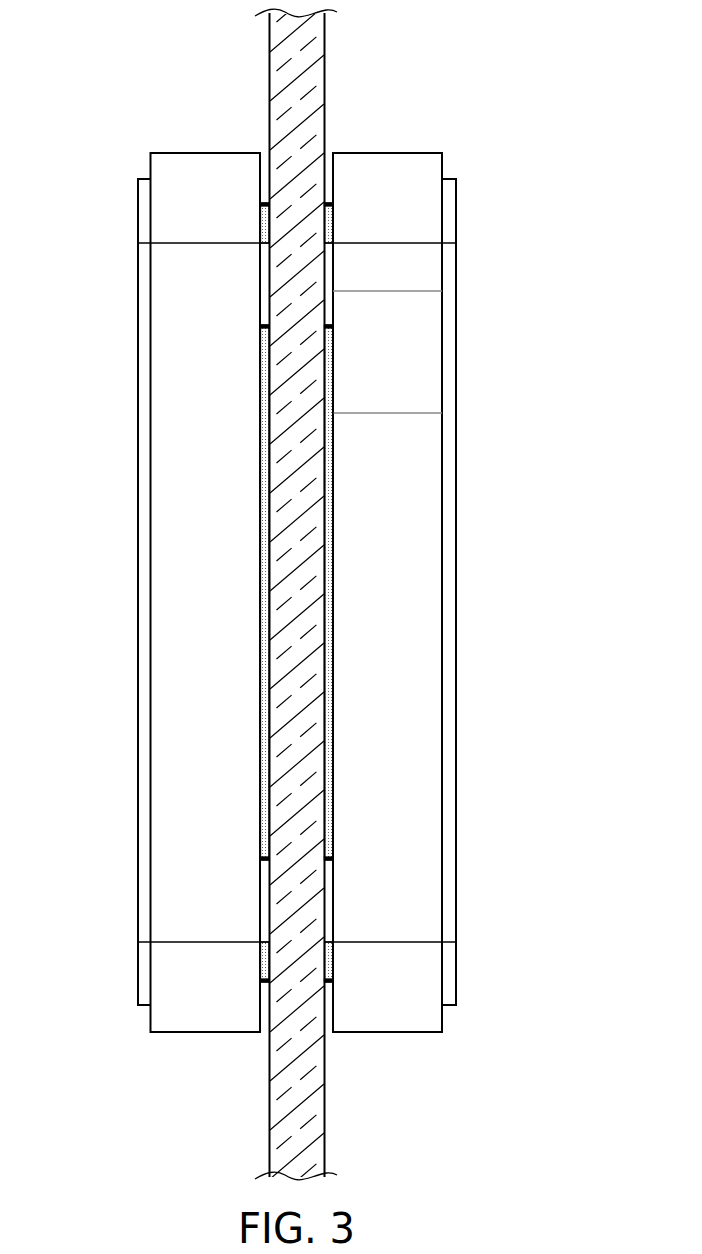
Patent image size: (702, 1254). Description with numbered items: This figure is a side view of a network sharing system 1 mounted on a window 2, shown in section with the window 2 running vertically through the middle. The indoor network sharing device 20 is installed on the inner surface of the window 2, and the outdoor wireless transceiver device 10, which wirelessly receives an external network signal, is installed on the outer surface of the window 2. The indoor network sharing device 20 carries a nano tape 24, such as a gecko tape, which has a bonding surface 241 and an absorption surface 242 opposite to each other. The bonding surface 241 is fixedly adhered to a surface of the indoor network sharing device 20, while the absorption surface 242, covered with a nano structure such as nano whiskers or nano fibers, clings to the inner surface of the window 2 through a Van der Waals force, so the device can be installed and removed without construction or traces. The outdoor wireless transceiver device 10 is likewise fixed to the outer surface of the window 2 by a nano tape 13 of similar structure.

The network sharing system 1 is at (502, 144).
The window 2 is at (317, 42).
The outdoor wireless transceiver device 10 is at (457, 613).
The nano tape 13 is at (330, 480).
The indoor network sharing device 20 is at (138, 625).
The nano tape 24 is at (312, 592).
The bonding surface 241 is at (260, 410).
The absorption surface 242 is at (270, 358).